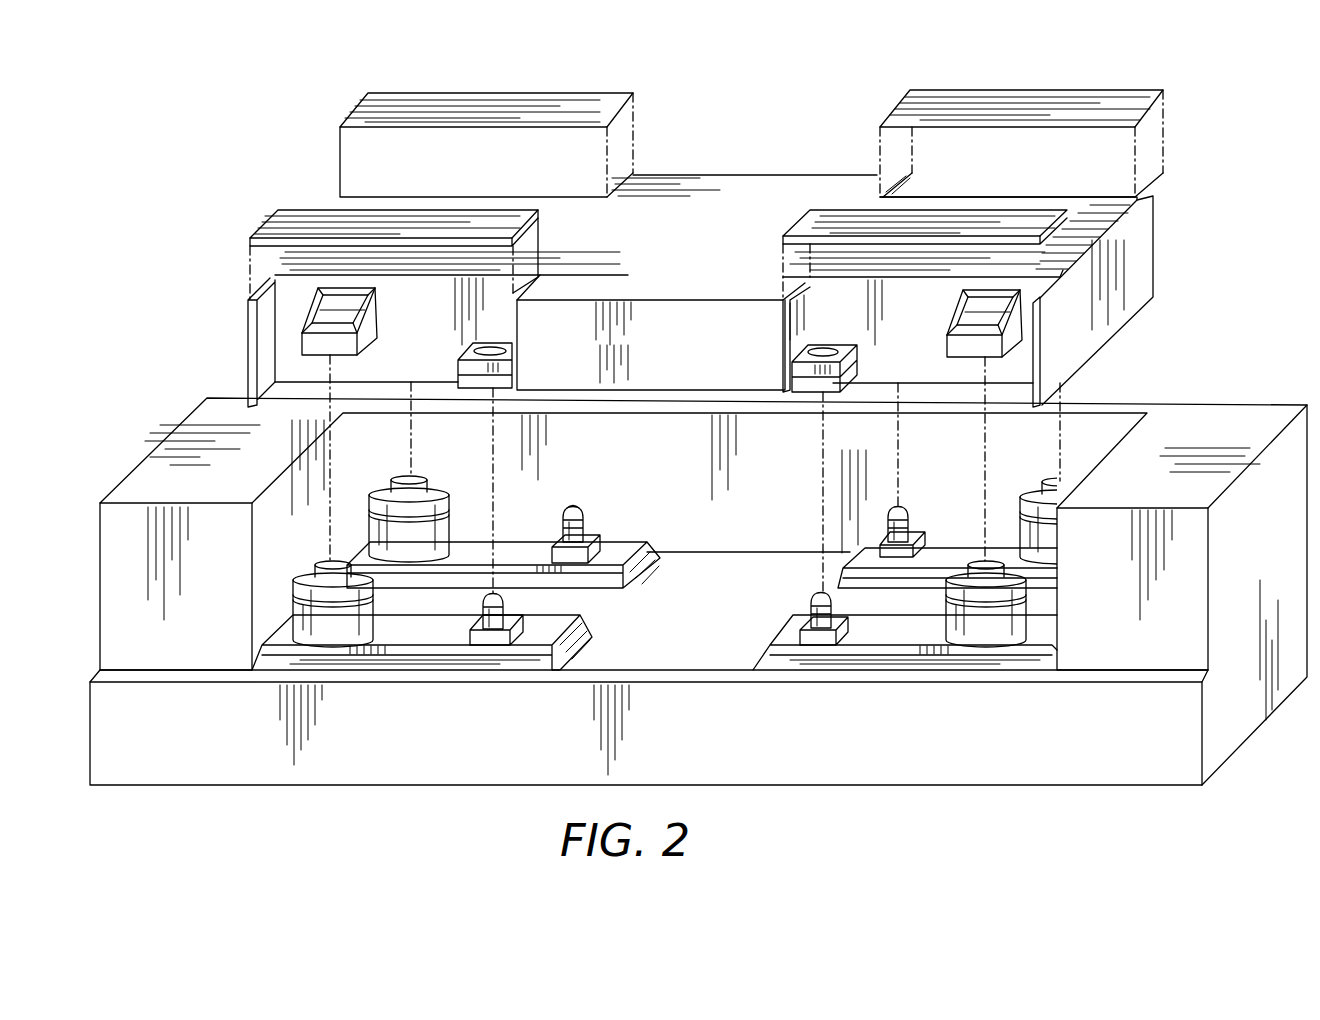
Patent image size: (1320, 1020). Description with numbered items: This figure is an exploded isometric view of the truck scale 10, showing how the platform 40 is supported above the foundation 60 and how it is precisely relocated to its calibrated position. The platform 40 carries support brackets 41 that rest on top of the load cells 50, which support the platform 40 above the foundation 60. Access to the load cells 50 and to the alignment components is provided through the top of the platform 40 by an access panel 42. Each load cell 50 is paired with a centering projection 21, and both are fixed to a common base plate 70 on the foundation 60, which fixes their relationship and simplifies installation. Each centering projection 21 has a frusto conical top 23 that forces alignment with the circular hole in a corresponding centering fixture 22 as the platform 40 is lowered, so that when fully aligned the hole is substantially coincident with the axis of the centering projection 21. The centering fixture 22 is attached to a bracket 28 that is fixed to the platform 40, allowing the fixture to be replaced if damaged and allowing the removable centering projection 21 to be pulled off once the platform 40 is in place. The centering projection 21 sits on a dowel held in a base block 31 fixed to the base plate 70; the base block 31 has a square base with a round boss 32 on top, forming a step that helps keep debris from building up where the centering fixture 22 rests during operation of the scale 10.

The truck scale 10 is at (792, 113).
The foundation 60 is at (716, 622).
The platform 40 is at (668, 270).
The access panel 42 is at (513, 107).
The support bracket 41 is at (366, 313).
The bracket 28 is at (470, 356).
The centering fixture 22 is at (464, 385).
The base plate 70 is at (507, 553).
The load cell 50 is at (315, 606).
The base block 31 is at (600, 543).
The centering projection 21 is at (583, 522).
The frusto conical top 23 is at (577, 512).
The round boss 32 is at (808, 617).